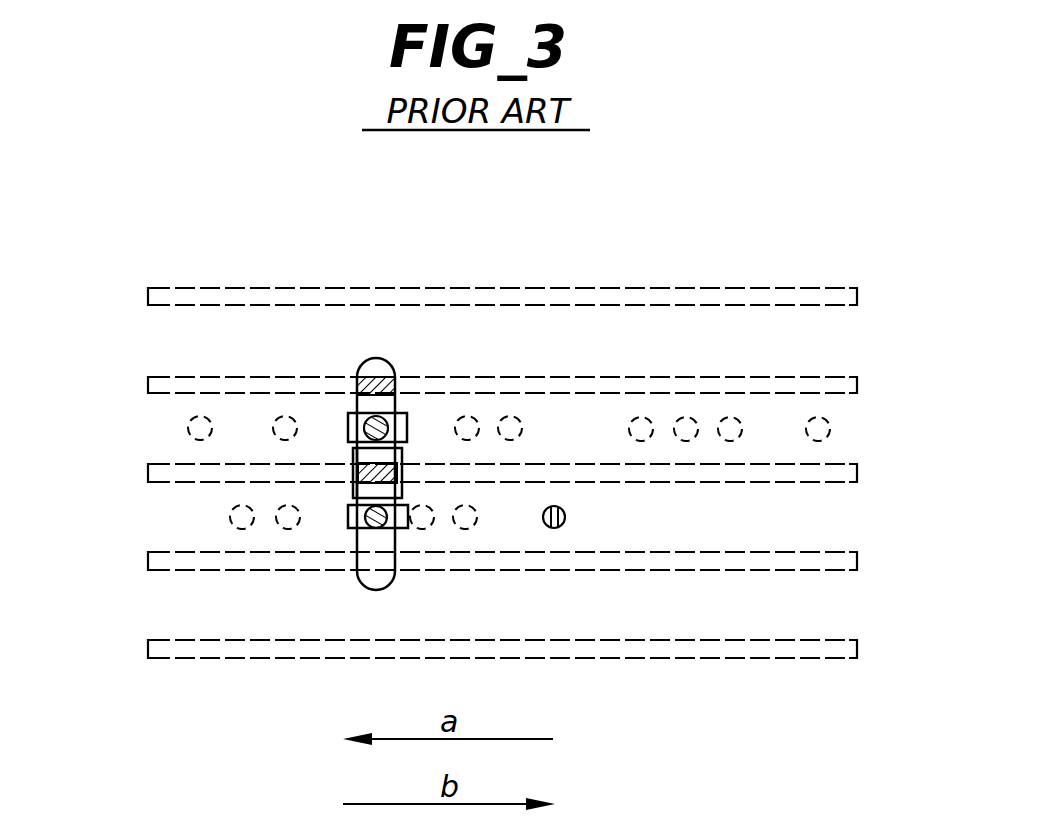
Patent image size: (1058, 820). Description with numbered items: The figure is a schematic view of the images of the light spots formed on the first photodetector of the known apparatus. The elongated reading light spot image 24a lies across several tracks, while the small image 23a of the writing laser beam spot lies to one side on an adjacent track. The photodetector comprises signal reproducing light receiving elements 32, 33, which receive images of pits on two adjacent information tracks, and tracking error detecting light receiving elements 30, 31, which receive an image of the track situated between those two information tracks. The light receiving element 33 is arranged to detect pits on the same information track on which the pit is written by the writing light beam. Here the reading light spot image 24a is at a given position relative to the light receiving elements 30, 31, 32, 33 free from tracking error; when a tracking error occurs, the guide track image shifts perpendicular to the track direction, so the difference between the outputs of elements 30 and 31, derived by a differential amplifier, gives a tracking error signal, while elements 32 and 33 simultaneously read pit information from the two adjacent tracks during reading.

The image of the reading light beam spot 24a is at (387, 358).
The signal reproducing light receiving element 32 is at (348, 418).
The tracking error detecting light receiving element 30 is at (353, 455).
The tracking error detecting light receiving element 31 is at (353, 490).
The signal reproducing light receiving element 33 is at (348, 525).
The image of the writing laser beam spot 23a is at (565, 517).